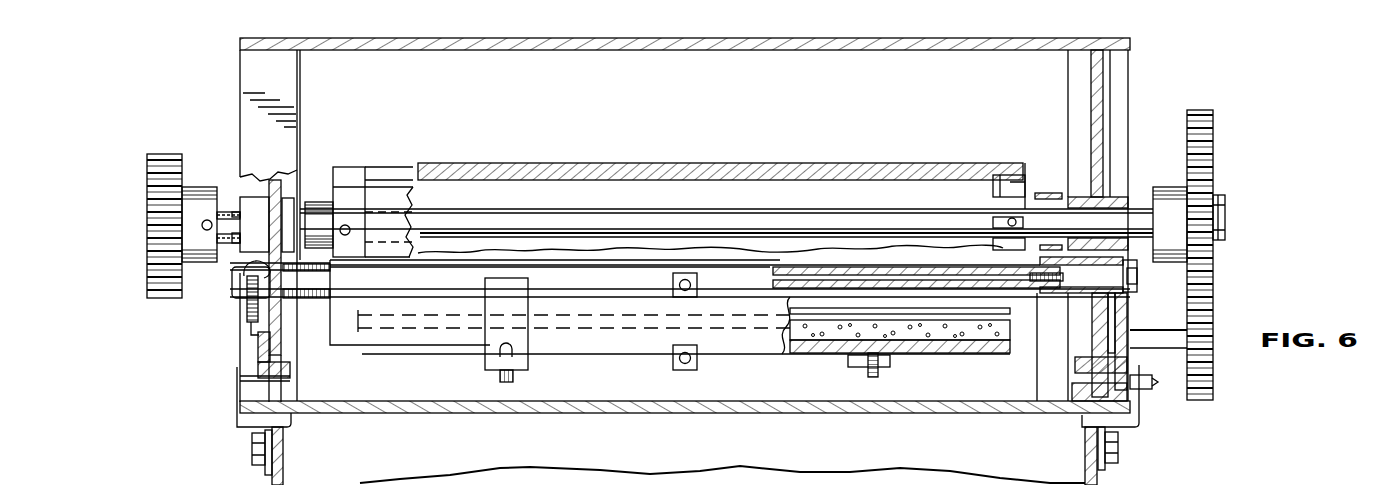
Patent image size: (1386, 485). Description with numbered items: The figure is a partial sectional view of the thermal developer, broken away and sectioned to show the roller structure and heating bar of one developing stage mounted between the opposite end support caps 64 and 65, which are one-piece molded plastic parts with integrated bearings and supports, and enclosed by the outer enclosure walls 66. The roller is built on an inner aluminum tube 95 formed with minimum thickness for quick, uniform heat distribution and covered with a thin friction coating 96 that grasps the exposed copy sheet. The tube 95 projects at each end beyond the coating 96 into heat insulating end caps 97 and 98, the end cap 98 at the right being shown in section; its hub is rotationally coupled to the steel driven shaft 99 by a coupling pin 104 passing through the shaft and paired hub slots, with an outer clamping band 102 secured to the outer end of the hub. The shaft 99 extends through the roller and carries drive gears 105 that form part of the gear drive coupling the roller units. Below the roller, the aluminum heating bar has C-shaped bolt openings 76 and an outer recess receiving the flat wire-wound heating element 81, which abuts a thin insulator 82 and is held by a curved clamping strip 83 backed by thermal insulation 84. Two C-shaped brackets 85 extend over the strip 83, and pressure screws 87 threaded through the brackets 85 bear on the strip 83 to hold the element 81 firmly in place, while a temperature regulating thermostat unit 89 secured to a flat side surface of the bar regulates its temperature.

The end support cap 64 is at (1100, 132).
The end support cap 65 is at (278, 340).
The outer enclosure walls 66 is at (624, 52).
The C-shaped bolt openings 76 is at (1127, 306).
The heating element 81 is at (792, 322).
The insulator 82 is at (812, 308).
The clamping strip 83 is at (965, 353).
The thermal insulation 84 is at (920, 340).
The C-shaped brackets 85 is at (880, 370).
The pressure screws 87 is at (865, 380).
The temperature regulating thermostat unit 89 is at (702, 342).
The inner tube 95 is at (928, 172).
The friction coating 96 is at (952, 166).
The end cap 97 is at (356, 167).
The end cap 98 is at (1032, 166).
The driven shaft 99 is at (885, 222).
The clamping band 102 is at (1037, 192).
The coupling pin 104 is at (1012, 218).
The drive gears 105 is at (148, 198).